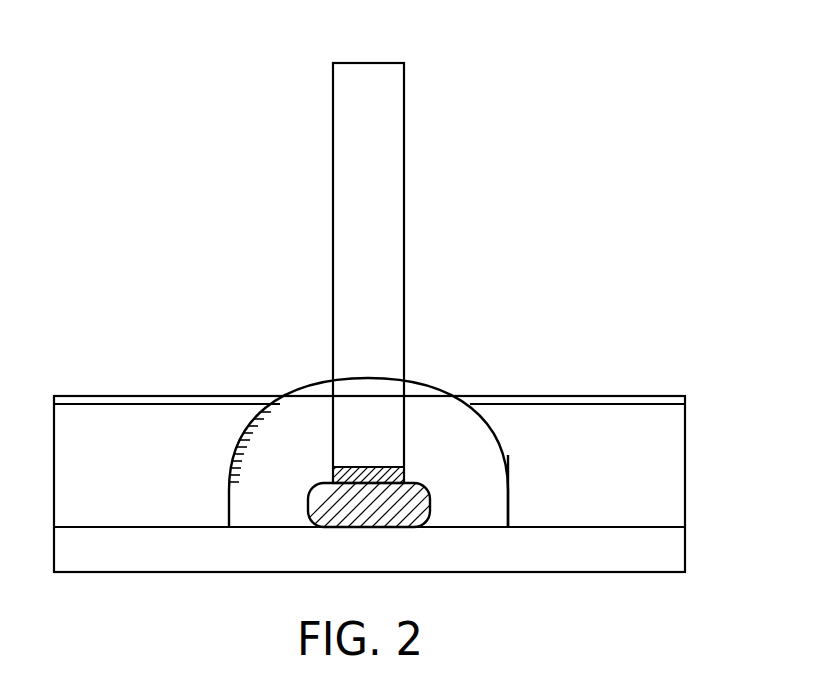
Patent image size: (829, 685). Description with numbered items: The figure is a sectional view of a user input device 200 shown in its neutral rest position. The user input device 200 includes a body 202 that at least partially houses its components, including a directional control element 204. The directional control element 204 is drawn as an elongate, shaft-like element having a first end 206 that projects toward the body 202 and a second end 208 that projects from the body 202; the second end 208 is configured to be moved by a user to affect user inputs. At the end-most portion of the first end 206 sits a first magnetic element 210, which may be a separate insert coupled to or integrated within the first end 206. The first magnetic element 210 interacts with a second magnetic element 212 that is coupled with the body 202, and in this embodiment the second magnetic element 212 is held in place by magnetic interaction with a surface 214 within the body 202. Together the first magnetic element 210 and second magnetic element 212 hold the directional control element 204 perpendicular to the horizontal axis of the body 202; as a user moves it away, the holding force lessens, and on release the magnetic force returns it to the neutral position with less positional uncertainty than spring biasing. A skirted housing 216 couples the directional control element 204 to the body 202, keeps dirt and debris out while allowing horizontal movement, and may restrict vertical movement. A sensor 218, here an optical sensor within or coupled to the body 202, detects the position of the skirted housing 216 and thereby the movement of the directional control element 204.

The user input device 200 is at (581, 71).
The body 202 is at (640, 396).
The directional control element 204 is at (423, 217).
The first end 206 is at (410, 387).
The second end 208 is at (404, 100).
The first magnetic element 210 is at (405, 464).
The second magnetic element 212 is at (404, 494).
The surface 214 is at (565, 527).
The skirted housing 216 is at (505, 452).
The sensor 218 is at (236, 449).